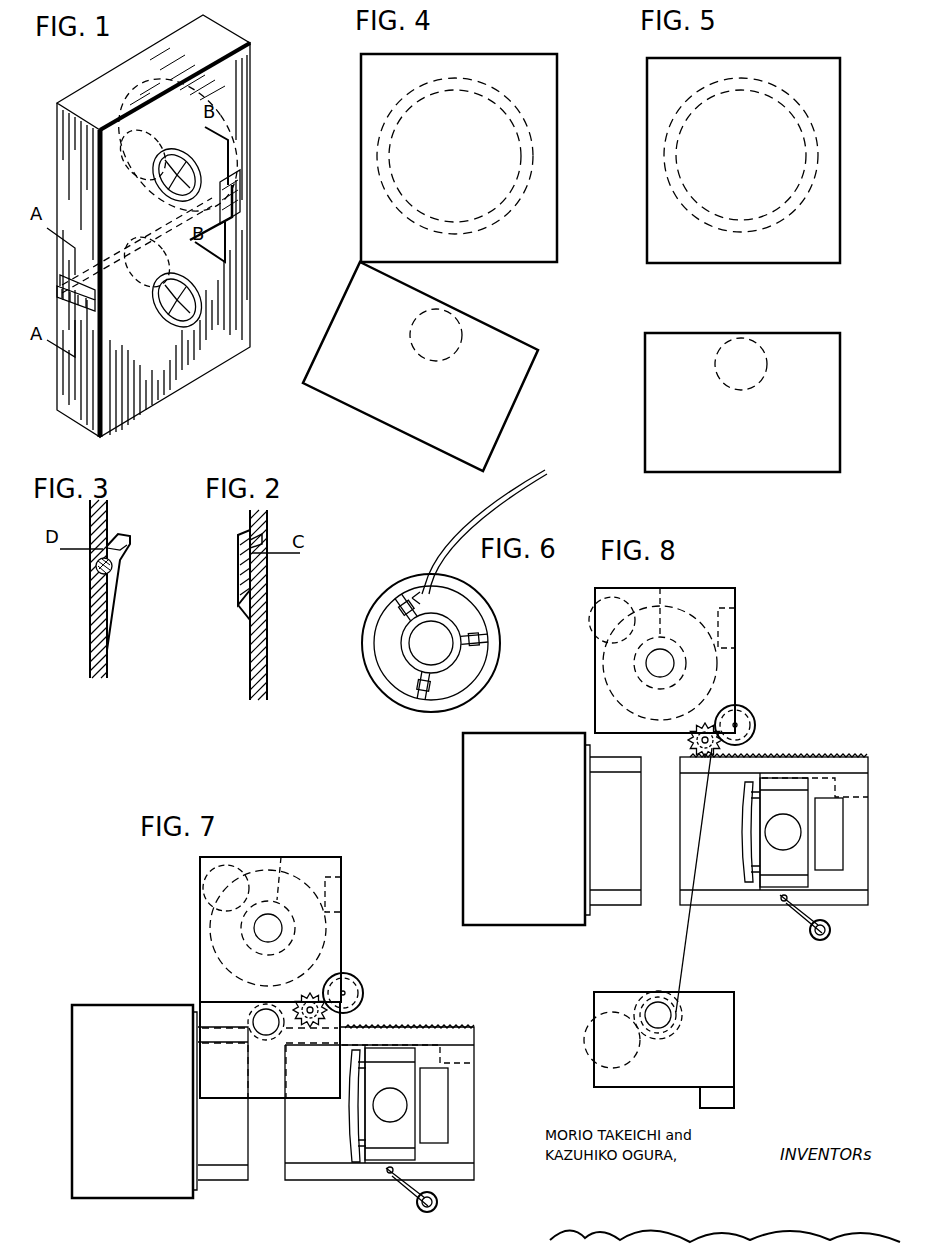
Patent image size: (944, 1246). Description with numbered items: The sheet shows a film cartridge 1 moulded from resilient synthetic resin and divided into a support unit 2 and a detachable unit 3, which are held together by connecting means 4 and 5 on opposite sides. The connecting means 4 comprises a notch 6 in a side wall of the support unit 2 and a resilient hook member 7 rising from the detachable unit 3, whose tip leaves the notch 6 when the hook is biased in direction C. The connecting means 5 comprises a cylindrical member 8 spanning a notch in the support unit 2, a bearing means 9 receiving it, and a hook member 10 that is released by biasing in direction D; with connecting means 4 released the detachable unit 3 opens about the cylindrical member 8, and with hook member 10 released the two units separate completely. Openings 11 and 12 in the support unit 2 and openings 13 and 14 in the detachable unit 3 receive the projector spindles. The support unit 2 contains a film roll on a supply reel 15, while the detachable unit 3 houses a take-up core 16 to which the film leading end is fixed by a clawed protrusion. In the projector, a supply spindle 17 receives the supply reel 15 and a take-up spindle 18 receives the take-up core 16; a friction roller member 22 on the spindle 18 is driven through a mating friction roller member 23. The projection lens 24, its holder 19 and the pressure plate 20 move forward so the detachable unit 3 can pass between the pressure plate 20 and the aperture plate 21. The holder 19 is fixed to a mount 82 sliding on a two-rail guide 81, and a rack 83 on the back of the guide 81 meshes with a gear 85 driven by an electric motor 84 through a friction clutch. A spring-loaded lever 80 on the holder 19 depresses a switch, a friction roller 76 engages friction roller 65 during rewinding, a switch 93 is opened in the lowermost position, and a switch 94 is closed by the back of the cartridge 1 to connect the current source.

In FIG. 1, the film cartridge 1 is at (272, 93).
In FIG. 4, the film cartridge 1 is at (340, 153).
In FIG. 5, the film cartridge 1 is at (624, 158).
In FIG. 7, the film cartridge 1 is at (198, 932).
In FIG. 1, the support unit 2 is at (238, 45).
In FIG. 4, the support unit 2 is at (555, 202).
In FIG. 5, the support unit 2 is at (652, 214).
In FIG. 7, the support unit 2 is at (349, 920).
In FIG. 8, the support unit 2 is at (700, 590).
In FIG. 1, the detachable unit 3 is at (206, 350).
In FIG. 4, the detachable unit 3 is at (525, 372).
In FIG. 5, the detachable unit 3 is at (650, 384).
In FIG. 7, the detachable unit 3 is at (205, 1010).
In FIG. 8, the detachable unit 3 is at (728, 1045).
In FIG. 1, the connecting means 4 is at (242, 228).
In FIG. 2, the connecting means 4 is at (265, 585).
In FIG. 1, the connecting means 5 is at (60, 308).
In FIG. 3, the connecting means 5 is at (88, 628).
In FIG. 2, the notch 6 is at (258, 540).
In FIG. 2, the hook member 7 is at (240, 550).
In FIG. 3, the cylindrical member 8 is at (96, 578).
In FIG. 3, the bearing means 9 is at (88, 612).
In FIG. 3, the hook member 10 is at (120, 555).
In FIG. 1, the opening 11 is at (137, 80).
In FIG. 1, the opening 12 is at (200, 165).
In FIG. 1, the opening 13 is at (143, 300).
In FIG. 1, the opening 14 is at (197, 296).
In FIG. 1, the supply reel 15 is at (105, 92).
In FIG. 4, the supply reel 15 is at (463, 337).
In FIG. 5, the supply reel 15 is at (766, 372).
In FIG. 1, the take-up core 16 is at (180, 333).
In FIG. 4, the take-up core 16 is at (462, 322).
In FIG. 5, the take-up core 16 is at (728, 340).
In FIG. 6, the take-up core 16 is at (488, 625).
In FIG. 7, the take-up core 16 is at (270, 1040).
In FIG. 8, the take-up core 16 is at (678, 1010).
In FIG. 7, the film supply spindle 17 is at (272, 928).
In FIG. 8, the film supply spindle 17 is at (665, 668).
In FIG. 7, the take-up spindle 18 is at (255, 1008).
In FIG. 8, the take-up spindle 18 is at (657, 1005).
In FIG. 7, the projection lens holder 19 is at (388, 1140).
In FIG. 8, the projection lens holder 19 is at (778, 880).
In FIG. 7, the pressure plate 20 is at (350, 1066).
In FIG. 8, the pressure plate 20 is at (752, 885).
In FIG. 7, the aperture plate 21 is at (195, 1190).
In FIG. 8, the aperture plate 21 is at (590, 918).
In FIG. 8, the friction roller member 22 is at (638, 1000).
In FIG. 8, the mating friction roller member 23 is at (586, 1048).
In FIG. 7, the projection lens 24 is at (440, 1108).
In FIG. 8, the projection lens 24 is at (838, 838).
In FIG. 7, the friction roller 65 is at (281, 865).
In FIG. 8, the friction roller 65 is at (656, 601).
In FIG. 7, the friction roller 76 is at (232, 866).
In FIG. 8, the friction roller 76 is at (595, 600).
In FIG. 7, the lever 80 is at (437, 1204).
In FIG. 8, the lever 80 is at (830, 932).
In FIG. 7, the guide 81 is at (292, 1172).
In FIG. 8, the guide 81 is at (720, 905).
In FIG. 7, the mount 82 is at (405, 1036).
In FIG. 8, the mount 82 is at (786, 765).
In FIG. 7, the rack 83 is at (450, 1030).
In FIG. 8, the rack 83 is at (824, 758).
In FIG. 7, the electric motor 84 is at (362, 992).
In FIG. 8, the electric motor 84 is at (758, 726).
In FIG. 7, the gear 85 is at (335, 975).
In FIG. 8, the gear 85 is at (732, 710).
In FIG. 8, the switch 93 is at (732, 1107).
In FIG. 7, the switch 94 is at (341, 895).
In FIG. 8, the switch 94 is at (743, 638).